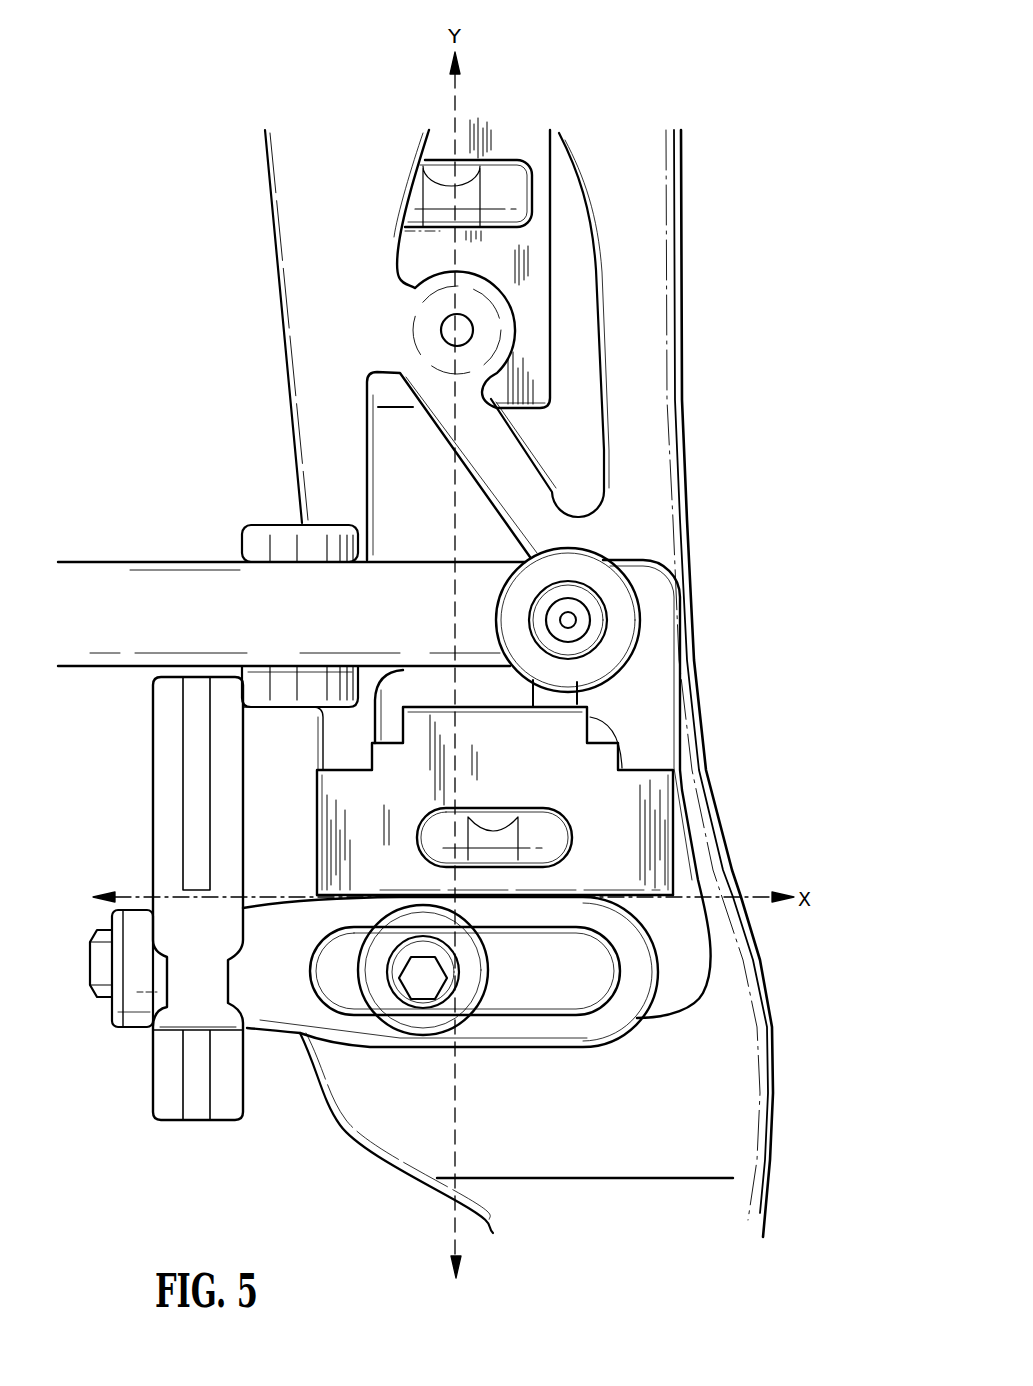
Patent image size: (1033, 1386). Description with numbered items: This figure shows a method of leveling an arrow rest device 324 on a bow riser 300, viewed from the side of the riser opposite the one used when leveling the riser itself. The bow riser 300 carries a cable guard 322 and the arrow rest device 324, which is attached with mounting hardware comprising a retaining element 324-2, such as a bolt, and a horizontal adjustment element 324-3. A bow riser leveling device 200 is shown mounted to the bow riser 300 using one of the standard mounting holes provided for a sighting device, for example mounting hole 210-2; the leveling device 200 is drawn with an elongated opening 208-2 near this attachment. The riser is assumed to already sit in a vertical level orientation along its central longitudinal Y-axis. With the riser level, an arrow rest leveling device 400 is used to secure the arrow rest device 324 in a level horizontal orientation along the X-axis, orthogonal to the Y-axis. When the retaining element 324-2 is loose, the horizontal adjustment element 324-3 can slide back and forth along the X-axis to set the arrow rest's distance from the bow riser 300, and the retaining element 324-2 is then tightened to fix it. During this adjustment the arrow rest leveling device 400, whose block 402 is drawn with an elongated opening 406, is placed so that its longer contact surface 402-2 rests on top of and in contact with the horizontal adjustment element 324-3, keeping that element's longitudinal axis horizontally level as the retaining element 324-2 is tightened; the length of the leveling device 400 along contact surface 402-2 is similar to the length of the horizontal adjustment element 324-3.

The bow riser leveling device 200 is at (552, 277).
The slot 208-2 is at (503, 168).
The mounting hole 210-2 is at (477, 328).
The bow riser 300 is at (279, 289).
The cable guard 322 is at (162, 562).
The arrow rest device 324 is at (168, 788).
The retaining element 324-2 is at (418, 990).
The horizontal adjustment element 324-3 is at (583, 1005).
The arrow rest leveling device 400 is at (583, 693).
The clamp block 402 is at (650, 865).
The longer contact surface 402-2 is at (653, 897).
The slot 406 is at (540, 833).